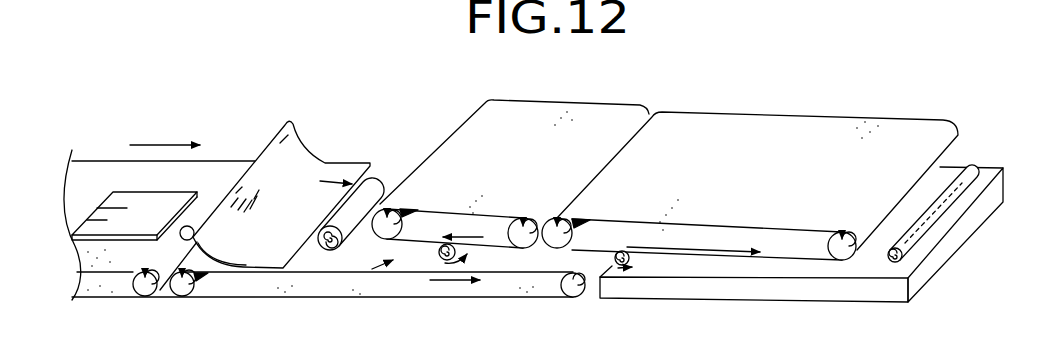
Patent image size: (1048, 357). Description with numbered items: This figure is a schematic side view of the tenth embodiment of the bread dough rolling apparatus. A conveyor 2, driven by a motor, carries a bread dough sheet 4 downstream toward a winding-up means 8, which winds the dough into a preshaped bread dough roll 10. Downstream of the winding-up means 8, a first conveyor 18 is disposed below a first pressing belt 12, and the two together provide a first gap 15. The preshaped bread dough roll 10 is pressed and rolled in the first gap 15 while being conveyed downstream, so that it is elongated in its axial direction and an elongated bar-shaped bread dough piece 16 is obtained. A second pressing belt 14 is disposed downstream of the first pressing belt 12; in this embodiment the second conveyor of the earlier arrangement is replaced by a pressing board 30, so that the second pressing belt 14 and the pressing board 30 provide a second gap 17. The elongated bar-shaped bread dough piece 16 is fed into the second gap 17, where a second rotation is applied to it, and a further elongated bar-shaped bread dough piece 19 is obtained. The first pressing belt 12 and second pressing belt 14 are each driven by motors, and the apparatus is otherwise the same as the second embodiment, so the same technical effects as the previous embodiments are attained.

The conveyor 2 is at (228, 160).
The bread dough sheet 4 is at (127, 200).
The winding-up means 8 is at (305, 146).
The preshaped bread dough roll 10 is at (388, 183).
The first pressing belt 12 is at (460, 143).
The second pressing belt 14 is at (858, 125).
The first gap 15 is at (363, 273).
The elongated bar-shaped bread dough piece 16 is at (635, 272).
The second gap 17 is at (680, 267).
The first conveyor 18 is at (242, 298).
The further elongated bar-shaped bread dough piece 19 is at (933, 208).
The pressing board 30 is at (777, 302).